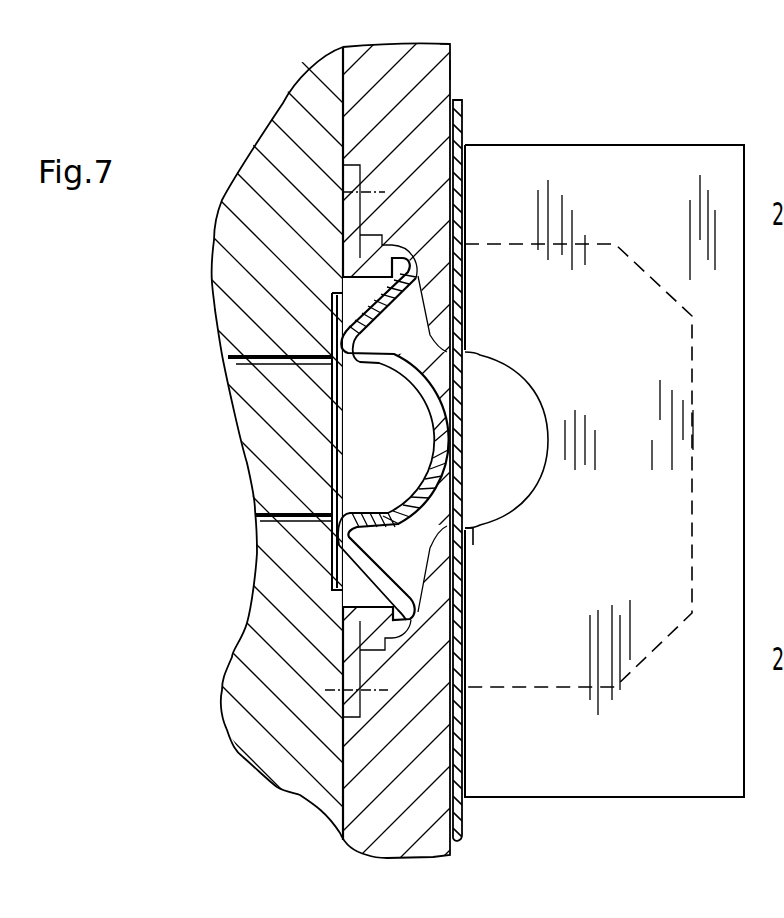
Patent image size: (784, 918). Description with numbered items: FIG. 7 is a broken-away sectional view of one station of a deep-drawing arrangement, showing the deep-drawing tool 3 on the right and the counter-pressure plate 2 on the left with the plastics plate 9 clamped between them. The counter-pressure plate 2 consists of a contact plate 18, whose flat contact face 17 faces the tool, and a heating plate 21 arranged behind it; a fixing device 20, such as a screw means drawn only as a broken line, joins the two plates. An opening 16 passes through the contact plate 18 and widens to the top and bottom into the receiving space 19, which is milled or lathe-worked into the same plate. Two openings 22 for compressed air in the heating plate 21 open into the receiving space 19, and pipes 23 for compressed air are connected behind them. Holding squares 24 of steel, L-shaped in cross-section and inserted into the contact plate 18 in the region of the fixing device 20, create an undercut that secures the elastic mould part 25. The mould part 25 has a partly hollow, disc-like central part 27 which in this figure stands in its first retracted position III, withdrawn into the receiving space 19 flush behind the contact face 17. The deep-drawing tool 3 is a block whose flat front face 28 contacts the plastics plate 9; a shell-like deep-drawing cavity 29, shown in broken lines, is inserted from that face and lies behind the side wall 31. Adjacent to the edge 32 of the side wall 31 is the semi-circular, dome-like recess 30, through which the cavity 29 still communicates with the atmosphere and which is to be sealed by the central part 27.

The counter-pressure plate 2 is at (345, 59).
The deep-drawing tool 3 is at (607, 173).
The plastics plate 9 is at (464, 160).
The opening 16 is at (345, 543).
The contact face 17 is at (452, 70).
The contact plate 18 is at (425, 60).
The receiving space 19 is at (372, 337).
The fixing device 20 is at (343, 190).
The heating plate 21 is at (275, 152).
The openings for compressed air 22 is at (258, 518).
The pipes for compressed air 23 is at (232, 359).
The holding squares 24 is at (355, 670).
The mould part 25 is at (402, 396).
The central part 27 is at (440, 457).
The front face 28 is at (465, 723).
The deep-drawing cavity 29 is at (633, 527).
The recess 30 is at (530, 390).
The side wall 31 is at (635, 770).
The edge 32 is at (470, 548).
The first retracted position III is at (416, 353).